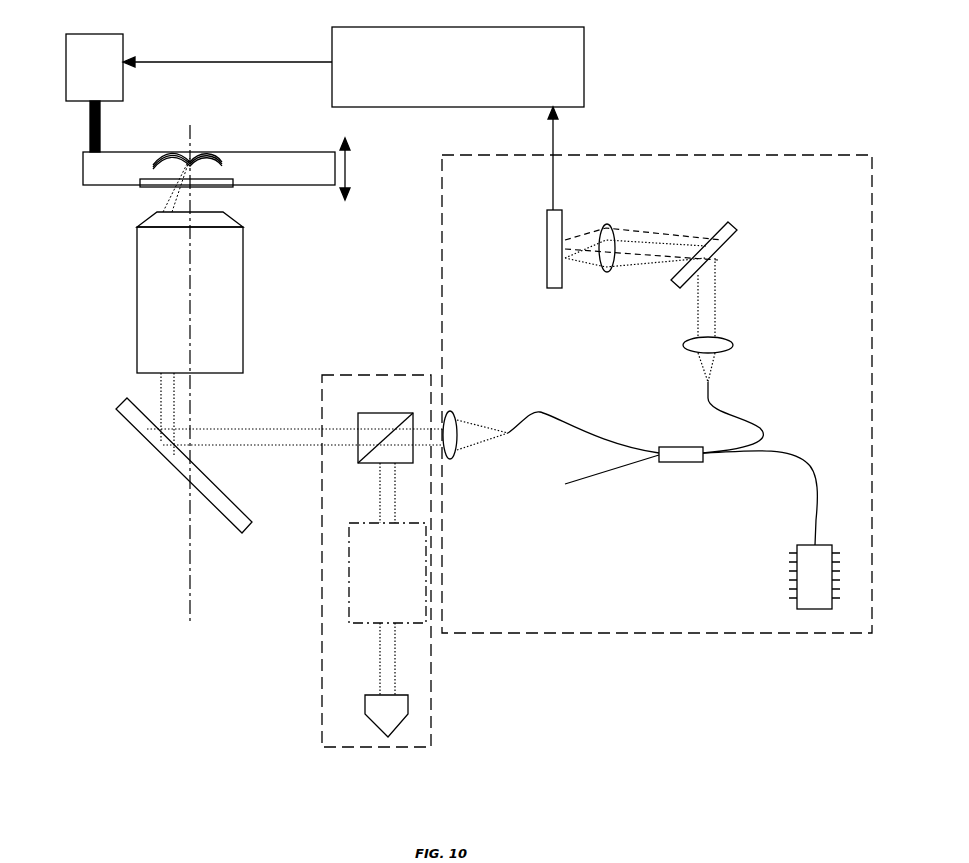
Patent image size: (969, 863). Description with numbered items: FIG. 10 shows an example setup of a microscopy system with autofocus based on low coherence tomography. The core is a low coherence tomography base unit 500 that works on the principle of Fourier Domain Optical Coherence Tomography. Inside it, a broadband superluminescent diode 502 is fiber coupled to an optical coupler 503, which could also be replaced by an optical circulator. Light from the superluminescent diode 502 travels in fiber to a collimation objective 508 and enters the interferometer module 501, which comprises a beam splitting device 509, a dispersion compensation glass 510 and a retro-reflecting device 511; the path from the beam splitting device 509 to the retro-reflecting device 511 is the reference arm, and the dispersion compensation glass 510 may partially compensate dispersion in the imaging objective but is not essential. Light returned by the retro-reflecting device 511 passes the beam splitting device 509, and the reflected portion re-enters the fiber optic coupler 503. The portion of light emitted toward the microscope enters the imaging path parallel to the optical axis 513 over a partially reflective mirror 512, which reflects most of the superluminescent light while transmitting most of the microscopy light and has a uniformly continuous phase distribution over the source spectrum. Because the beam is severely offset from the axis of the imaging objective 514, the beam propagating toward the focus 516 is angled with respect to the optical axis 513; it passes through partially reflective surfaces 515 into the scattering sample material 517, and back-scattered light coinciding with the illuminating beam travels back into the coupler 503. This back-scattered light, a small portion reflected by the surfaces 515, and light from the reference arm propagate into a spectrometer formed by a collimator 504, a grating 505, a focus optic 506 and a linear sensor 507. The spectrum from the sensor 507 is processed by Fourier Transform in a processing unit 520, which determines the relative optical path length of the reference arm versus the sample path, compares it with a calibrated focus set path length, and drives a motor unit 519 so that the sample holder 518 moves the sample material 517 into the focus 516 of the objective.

The low coherence tomography base unit 500 is at (738, 618).
The interferometer module 501 is at (428, 720).
The superluminescent diode 502 is at (803, 568).
The optical coupler 503 is at (672, 458).
The collimator 504 is at (718, 348).
The grating 505 is at (728, 238).
The focus optic 506 is at (600, 235).
The linear sensor 507 is at (547, 268).
The collimation objective 508 is at (454, 450).
The beam splitting device 509 is at (385, 420).
The dispersion compensation glass 510 is at (356, 525).
The retro-reflecting device 511 is at (370, 700).
The partially reflective mirror 512 is at (182, 470).
The optical axis 513 is at (190, 535).
The imaging objective 514 is at (213, 292).
The partially reflective surfaces 515 is at (233, 183).
The focus 516 is at (192, 153).
The scattering sample material 517 is at (158, 154).
The sample holder 518 is at (90, 180).
The motor unit 519 is at (78, 62).
The processing unit 520 is at (572, 97).